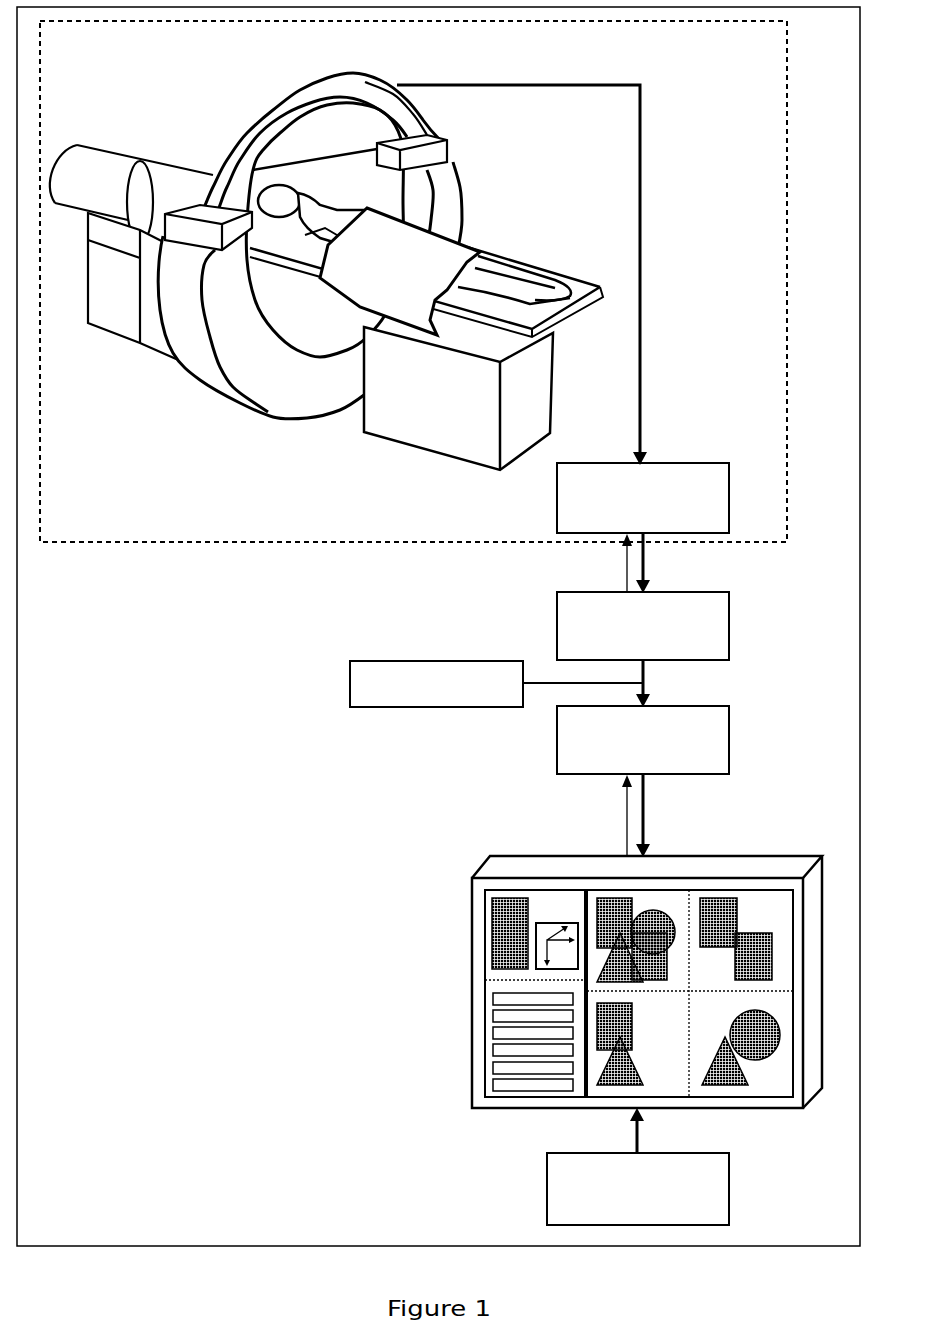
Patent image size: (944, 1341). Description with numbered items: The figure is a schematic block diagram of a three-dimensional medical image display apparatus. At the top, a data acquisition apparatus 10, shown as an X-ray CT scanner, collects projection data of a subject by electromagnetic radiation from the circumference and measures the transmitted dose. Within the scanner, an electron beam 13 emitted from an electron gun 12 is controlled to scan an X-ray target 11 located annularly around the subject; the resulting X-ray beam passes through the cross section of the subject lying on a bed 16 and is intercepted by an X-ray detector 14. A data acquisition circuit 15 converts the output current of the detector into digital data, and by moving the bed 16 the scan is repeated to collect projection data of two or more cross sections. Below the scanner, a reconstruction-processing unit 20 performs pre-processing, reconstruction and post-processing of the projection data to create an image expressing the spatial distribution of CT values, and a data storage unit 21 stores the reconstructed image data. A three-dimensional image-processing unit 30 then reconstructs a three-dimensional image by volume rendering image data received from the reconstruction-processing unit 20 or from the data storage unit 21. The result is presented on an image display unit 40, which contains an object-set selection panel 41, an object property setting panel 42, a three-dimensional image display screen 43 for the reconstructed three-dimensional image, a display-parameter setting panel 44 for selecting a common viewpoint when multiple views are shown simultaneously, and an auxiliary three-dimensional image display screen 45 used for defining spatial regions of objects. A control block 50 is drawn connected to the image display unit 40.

The data acquisition apparatus 10 is at (118, 545).
The X-ray target 11 is at (190, 370).
The electron gun 12 is at (123, 167).
The electron beam 13 is at (303, 170).
The X-ray detector 14 is at (363, 68).
The data acquisition circuit 15 is at (732, 493).
The bed 16 is at (537, 390).
The reconstruction-processing unit 20 is at (732, 623).
The data storage unit 21 is at (350, 682).
The three-dimensional image-processing unit 30 is at (732, 737).
The image display unit 40 is at (479, 940).
The object-set selection panel 41 is at (498, 1002).
The object property setting panel 42 is at (484, 1047).
The three-dimensional image display screen 43 is at (712, 898).
The display-parameter setting panel 44 is at (550, 920).
The auxiliary three-dimensional image display screen 45 is at (493, 935).
The control 50 is at (732, 1180).